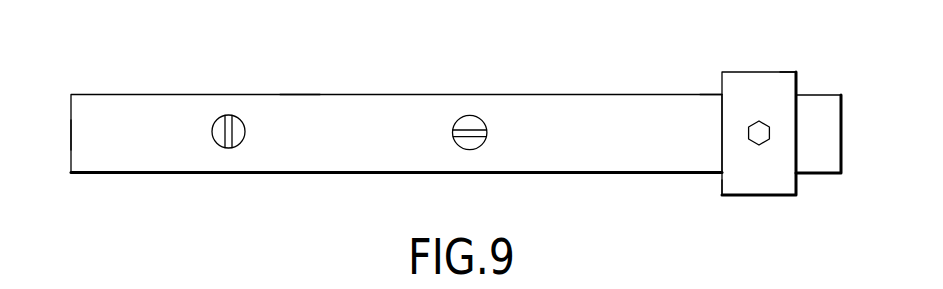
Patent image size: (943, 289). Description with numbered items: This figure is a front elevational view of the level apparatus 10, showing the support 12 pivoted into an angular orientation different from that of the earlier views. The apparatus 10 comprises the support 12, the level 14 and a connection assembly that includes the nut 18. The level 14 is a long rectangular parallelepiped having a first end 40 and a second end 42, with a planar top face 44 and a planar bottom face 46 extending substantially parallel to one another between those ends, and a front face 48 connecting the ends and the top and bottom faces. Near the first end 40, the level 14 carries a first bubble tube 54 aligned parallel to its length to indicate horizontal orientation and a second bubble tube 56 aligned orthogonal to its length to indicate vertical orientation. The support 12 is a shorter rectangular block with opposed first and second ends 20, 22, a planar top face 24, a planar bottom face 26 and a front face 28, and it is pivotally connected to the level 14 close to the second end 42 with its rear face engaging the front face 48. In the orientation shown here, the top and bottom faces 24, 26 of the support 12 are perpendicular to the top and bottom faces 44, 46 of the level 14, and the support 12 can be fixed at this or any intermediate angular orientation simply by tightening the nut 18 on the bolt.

The level apparatus 10 is at (100, 52).
The support 12 is at (722, 197).
The level 14 is at (272, 173).
The nut 18 is at (765, 140).
The first end 20 is at (767, 70).
The second end 22 is at (773, 198).
The planar top face 24 is at (797, 150).
The planar bottom face 26 is at (722, 110).
The front face 28 is at (790, 80).
The first end 40 is at (71, 133).
The second end 42 is at (842, 132).
The planar top face 44 is at (287, 93).
The planar bottom face 46 is at (402, 173).
The front face 48 is at (553, 162).
The first bubble tube 54 is at (472, 129).
The second bubble tube 56 is at (222, 128).